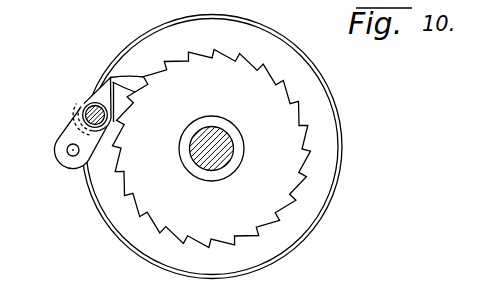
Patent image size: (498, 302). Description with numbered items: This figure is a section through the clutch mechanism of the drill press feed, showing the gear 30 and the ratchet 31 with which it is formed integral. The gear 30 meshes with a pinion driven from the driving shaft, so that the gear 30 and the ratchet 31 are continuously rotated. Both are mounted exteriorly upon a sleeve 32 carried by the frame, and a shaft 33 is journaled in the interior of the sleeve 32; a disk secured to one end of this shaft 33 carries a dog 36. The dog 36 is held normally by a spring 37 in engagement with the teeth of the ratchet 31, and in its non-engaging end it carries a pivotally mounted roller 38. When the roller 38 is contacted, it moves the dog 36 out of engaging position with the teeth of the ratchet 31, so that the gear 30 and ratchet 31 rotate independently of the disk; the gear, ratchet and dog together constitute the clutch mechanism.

The gear 30 is at (270, 40).
The ratchet 31 is at (298, 108).
The sleeve 32 is at (236, 129).
The shaft 33 is at (232, 153).
The dog 36 is at (107, 93).
The spring 37 is at (113, 78).
The roller 38 is at (62, 138).